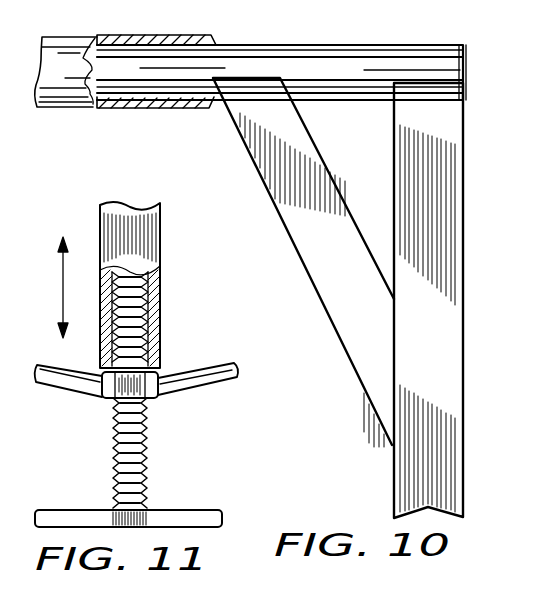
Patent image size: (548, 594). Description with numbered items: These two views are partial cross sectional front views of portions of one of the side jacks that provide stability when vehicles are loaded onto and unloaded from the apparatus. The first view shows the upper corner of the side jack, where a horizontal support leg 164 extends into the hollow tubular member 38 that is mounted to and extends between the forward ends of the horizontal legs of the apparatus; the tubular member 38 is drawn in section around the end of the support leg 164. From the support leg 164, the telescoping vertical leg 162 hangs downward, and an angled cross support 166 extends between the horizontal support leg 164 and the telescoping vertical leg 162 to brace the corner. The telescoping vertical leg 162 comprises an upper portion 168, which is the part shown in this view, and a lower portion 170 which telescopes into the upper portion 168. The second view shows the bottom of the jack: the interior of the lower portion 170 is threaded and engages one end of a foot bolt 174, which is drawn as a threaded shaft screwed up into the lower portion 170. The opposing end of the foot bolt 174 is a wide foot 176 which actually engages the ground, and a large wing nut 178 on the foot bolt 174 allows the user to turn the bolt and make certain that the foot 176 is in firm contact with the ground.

In FIG. 10, the hollow tubular member 38 is at (163, 36).
In FIG. 10, the horizontal support leg 164 is at (320, 58).
In FIG. 10, the telescoping vertical leg 162 is at (365, 298).
In FIG. 10, the angled cross support 166 is at (316, 171).
In FIG. 10, the upper portion 168 is at (453, 170).
In FIG. 11, the lower portion 170 is at (158, 228).
In FIG. 11, the wing nut 178 is at (212, 368).
In FIG. 11, the foot bolt 174 is at (145, 440).
In FIG. 11, the foot 176 is at (186, 515).